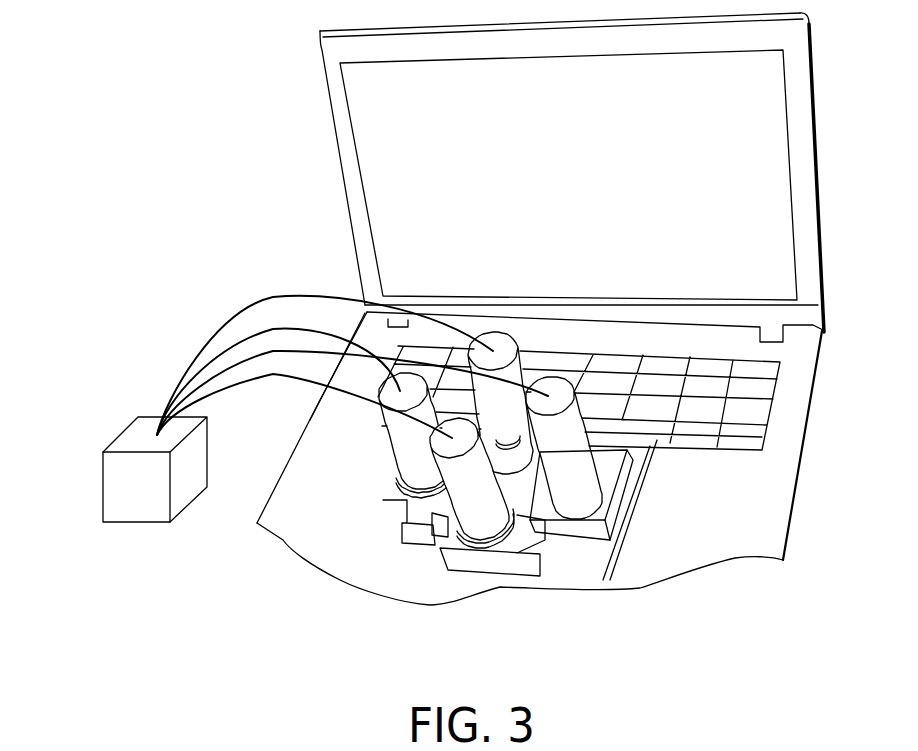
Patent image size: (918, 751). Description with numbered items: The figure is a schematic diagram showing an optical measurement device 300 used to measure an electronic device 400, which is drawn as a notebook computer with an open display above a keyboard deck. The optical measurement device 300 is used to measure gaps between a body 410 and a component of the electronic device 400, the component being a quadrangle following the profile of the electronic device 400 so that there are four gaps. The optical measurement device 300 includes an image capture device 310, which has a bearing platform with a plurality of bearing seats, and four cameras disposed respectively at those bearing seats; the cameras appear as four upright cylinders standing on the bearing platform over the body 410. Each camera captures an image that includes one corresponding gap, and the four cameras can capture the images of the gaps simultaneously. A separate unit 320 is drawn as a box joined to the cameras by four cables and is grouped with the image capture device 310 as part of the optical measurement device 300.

The electronic device 400 is at (327, 84).
The body 410 is at (294, 463).
The optical measurement device 300 is at (135, 562).
The image capture device 310 is at (697, 649).
The controller 320 is at (116, 487).